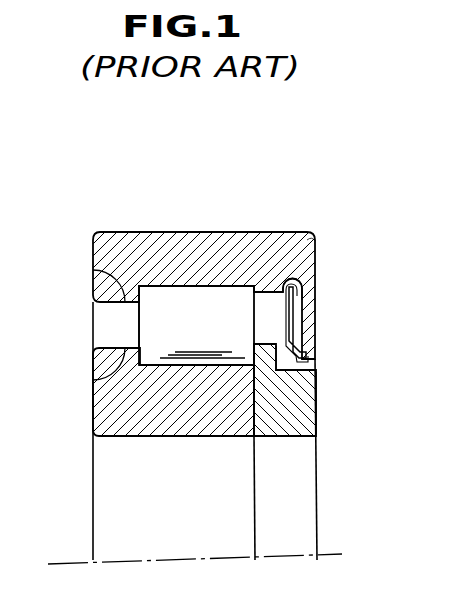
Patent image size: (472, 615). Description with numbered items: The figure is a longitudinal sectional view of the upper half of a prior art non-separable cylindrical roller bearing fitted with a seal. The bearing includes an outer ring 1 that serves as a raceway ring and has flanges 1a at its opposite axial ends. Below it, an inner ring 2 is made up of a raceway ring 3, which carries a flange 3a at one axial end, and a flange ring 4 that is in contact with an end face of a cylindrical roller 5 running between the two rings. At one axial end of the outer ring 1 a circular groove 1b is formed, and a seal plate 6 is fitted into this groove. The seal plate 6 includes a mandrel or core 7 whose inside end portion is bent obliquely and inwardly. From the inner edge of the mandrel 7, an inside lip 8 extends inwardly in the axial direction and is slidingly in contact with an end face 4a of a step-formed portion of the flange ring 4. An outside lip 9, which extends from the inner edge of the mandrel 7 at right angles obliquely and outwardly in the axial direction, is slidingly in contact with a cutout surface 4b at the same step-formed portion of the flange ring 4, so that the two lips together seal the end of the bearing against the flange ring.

The outer ring 1 is at (151, 243).
The flange 1a is at (93, 273).
The circular groove 1b is at (292, 290).
The inner ring 2 is at (206, 419).
The raceway ring 3 is at (125, 438).
The flange 3a is at (93, 378).
The flange ring 4 is at (277, 438).
The end face 4a is at (316, 417).
The cutout surface 4b is at (294, 371).
The cylindrical roller 5 is at (219, 306).
The seal plate 6 is at (316, 322).
The mandrel 7 is at (296, 328).
The inside lip 8 is at (286, 342).
The outside lip 9 is at (310, 364).